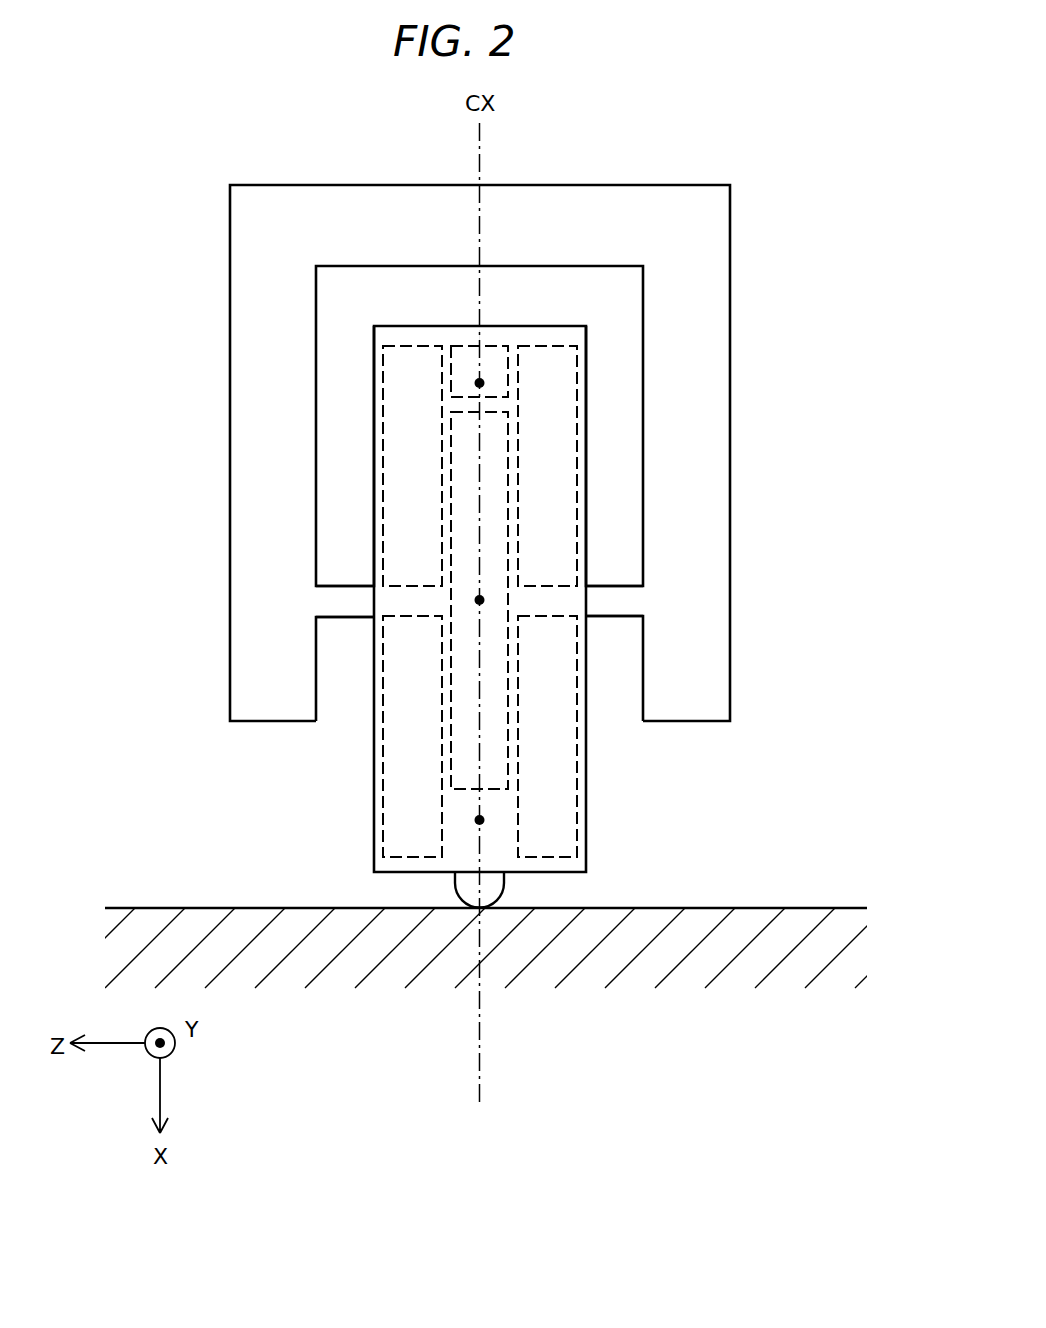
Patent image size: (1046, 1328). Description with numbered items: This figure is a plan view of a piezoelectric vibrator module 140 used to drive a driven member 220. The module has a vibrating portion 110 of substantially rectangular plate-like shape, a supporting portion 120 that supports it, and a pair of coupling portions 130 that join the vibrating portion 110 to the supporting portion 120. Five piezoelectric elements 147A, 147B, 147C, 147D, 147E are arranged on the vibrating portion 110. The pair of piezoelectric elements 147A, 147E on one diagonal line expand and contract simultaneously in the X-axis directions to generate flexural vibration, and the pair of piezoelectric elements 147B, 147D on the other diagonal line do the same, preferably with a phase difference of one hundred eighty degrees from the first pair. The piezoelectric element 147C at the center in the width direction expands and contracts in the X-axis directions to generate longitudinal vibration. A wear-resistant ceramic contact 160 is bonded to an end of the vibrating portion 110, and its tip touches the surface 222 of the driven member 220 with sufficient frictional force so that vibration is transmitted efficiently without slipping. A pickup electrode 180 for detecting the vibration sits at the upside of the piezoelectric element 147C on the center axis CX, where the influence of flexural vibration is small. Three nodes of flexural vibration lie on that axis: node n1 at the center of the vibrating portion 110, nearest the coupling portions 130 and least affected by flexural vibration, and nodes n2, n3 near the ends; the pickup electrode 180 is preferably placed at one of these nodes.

The vibrating portion 110 is at (374, 797).
The supporting portion 120 is at (688, 497).
The coupling portions 130 is at (347, 600).
The piezoelectric vibrator module 140 is at (637, 185).
The piezoelectric element 147A is at (577, 670).
The piezoelectric element 147B is at (508, 368).
The piezoelectric element 147C is at (509, 430).
The piezoelectric element 147D is at (383, 670).
The piezoelectric element 147E is at (383, 437).
The contact 160 is at (470, 905).
The pickup electrode 180 is at (495, 345).
The driven member 220 is at (720, 972).
The surface 222 is at (781, 908).
The node n1 is at (480, 600).
The node n2 is at (480, 820).
The node n3 is at (480, 383).